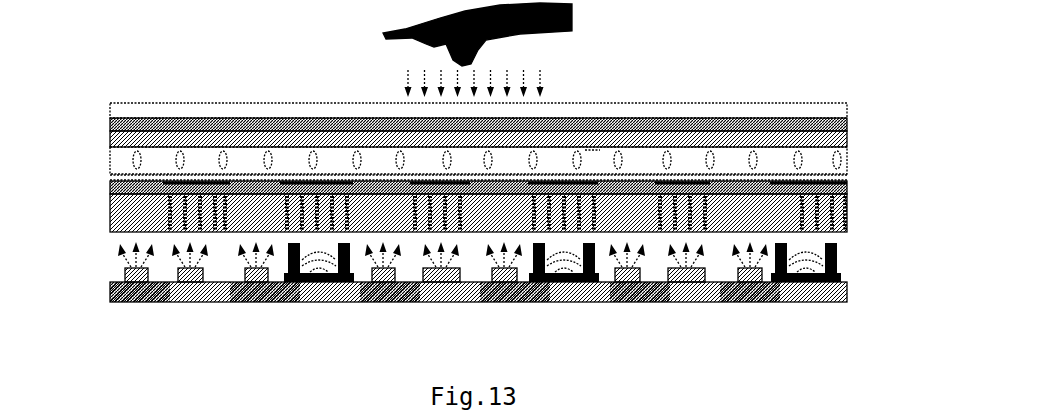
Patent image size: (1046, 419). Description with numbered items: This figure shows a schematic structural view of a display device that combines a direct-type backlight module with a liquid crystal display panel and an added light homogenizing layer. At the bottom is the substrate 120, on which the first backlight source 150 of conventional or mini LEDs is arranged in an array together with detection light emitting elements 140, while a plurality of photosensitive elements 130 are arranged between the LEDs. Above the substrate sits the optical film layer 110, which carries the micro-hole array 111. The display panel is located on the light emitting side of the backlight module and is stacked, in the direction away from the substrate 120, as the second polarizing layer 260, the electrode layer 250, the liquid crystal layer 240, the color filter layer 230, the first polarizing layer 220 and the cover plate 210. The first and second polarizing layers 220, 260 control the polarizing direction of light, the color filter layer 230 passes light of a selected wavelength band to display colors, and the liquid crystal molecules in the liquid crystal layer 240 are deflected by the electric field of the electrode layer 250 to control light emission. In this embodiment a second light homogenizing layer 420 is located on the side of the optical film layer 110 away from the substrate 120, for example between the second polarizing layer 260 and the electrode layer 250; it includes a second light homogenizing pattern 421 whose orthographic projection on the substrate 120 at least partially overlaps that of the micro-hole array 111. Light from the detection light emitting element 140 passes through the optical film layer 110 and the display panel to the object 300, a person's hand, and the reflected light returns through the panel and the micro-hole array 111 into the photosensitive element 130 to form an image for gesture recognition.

The object 300 is at (573, 14).
The cover plate 210 is at (848, 110).
The first polarizing layer 220 is at (110, 124).
The color filter layer 230 is at (848, 139).
The liquid crystal layer 240 is at (436, 120).
The second light homogenizing layer 420 is at (745, 172).
The second light homogenizing pattern 421 is at (592, 180).
The electrode layer 250 is at (848, 177).
The second polarizing layer 260 is at (110, 188).
The optical film layer 110 is at (483, 213).
The micro-hole array 111 is at (843, 200).
The substrate 120 is at (436, 314).
The photosensitive element 130 is at (318, 283).
The detection light emitting element 140 is at (190, 283).
The first backlight source 150 is at (667, 300).